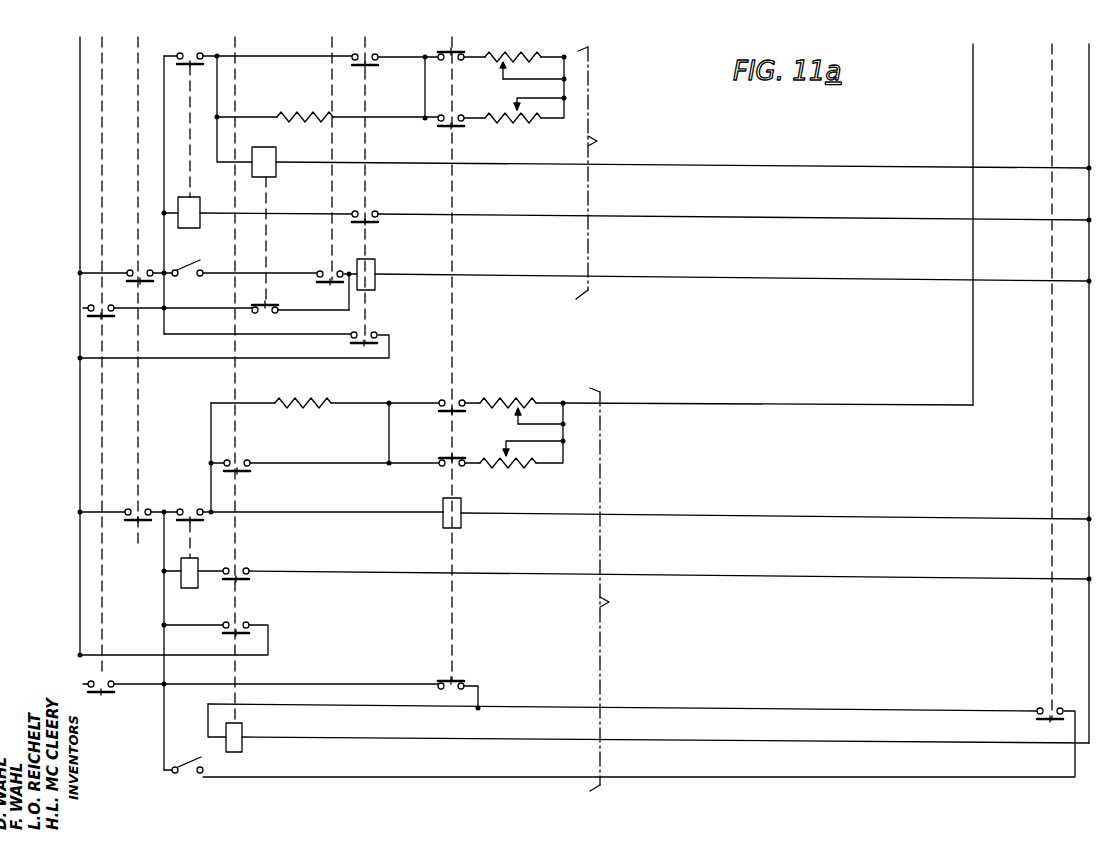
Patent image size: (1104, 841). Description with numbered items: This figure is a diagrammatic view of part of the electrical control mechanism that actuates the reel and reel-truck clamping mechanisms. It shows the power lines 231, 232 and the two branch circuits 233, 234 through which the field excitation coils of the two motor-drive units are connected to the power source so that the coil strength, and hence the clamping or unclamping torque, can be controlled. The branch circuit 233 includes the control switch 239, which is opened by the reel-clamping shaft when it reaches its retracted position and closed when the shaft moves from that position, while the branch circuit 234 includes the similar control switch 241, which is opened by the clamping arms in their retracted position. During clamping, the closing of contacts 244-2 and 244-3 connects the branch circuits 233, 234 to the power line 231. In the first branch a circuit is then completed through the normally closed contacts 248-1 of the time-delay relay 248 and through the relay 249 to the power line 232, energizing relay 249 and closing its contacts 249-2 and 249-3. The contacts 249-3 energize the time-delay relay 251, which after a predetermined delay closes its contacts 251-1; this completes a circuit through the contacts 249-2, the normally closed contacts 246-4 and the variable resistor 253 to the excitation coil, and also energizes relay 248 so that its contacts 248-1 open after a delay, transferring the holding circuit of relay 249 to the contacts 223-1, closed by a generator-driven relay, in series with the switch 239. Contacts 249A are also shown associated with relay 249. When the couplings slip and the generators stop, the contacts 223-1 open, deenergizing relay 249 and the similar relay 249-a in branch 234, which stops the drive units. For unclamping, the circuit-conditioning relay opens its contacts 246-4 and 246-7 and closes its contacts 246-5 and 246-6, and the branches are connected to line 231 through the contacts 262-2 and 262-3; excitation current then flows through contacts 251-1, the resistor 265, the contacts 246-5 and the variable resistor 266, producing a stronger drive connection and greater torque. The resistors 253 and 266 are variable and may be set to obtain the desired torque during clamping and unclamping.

The power line 231 is at (80, 113).
The power line 232 is at (1089, 455).
The branch circuit 233 is at (605, 173).
The branch circuit 234 is at (618, 589).
The control switch 239 is at (186, 277).
The control switch 241 is at (191, 777).
The contacts 244-2 is at (90, 304).
The contacts 244-3 is at (104, 692).
The normally closed contacts 246-4 is at (462, 58).
The normally open contacts 246-5 is at (440, 118).
The normally open contacts 246-6 is at (442, 400).
The normally closed contacts 246-7 is at (447, 468).
The time-delay relay 248 is at (276, 172).
The normally closed contacts 248-1 is at (266, 314).
The relay 249 is at (375, 272).
The contacts 249-2 is at (356, 66).
The contacts 249-3 is at (370, 214).
The relay contact 249A is at (372, 334).
The relay 249-a is at (242, 734).
The time-delay relay 251 is at (188, 230).
The contacts 251-1 is at (208, 60).
The variable resistor 253 is at (545, 57).
The contacts 262-2 is at (128, 268).
The contacts 262-3 is at (130, 520).
The resistor 265 is at (300, 116).
The variable resistor 266 is at (513, 121).
The contacts 223-1 is at (322, 264).